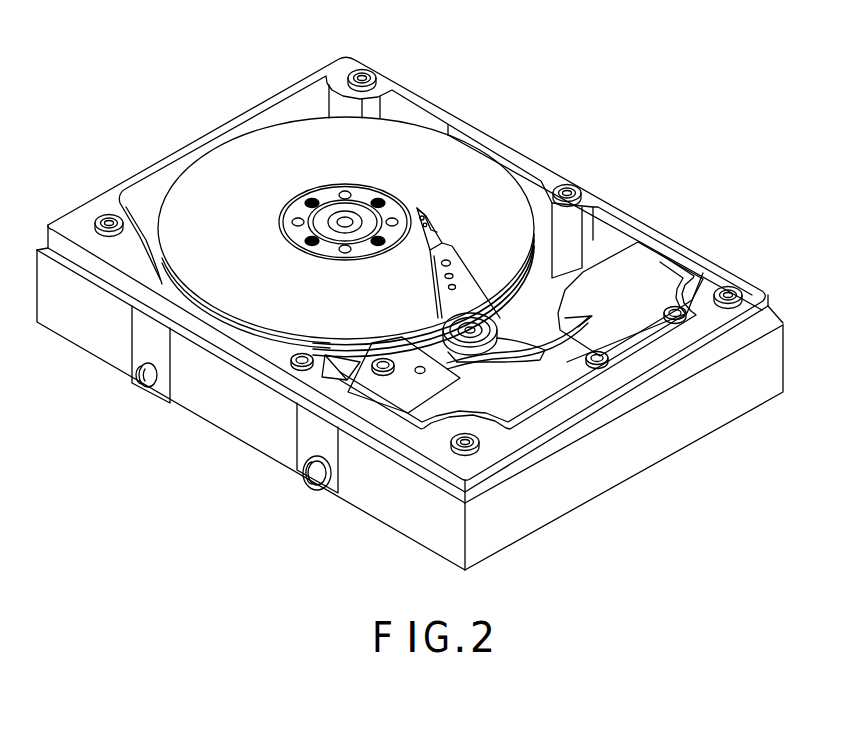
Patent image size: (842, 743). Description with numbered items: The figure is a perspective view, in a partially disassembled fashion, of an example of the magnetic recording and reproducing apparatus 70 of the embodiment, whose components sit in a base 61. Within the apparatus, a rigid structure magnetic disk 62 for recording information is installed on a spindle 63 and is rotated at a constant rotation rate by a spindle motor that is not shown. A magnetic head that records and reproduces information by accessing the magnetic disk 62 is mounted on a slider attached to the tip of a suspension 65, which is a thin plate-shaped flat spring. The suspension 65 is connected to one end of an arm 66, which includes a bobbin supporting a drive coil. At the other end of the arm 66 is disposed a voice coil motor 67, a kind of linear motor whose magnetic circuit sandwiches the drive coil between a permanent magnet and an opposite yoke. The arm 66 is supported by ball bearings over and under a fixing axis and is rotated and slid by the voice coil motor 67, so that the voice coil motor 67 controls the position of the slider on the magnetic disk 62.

The base (housing) 61 is at (682, 422).
The magnetic disk 62 is at (408, 155).
The spindle 63 is at (287, 207).
The suspension 65 is at (437, 232).
The arm 66 is at (455, 305).
The voice coil motor 67 is at (490, 362).
The magnetic recording and reproducing apparatus 70 is at (543, 73).